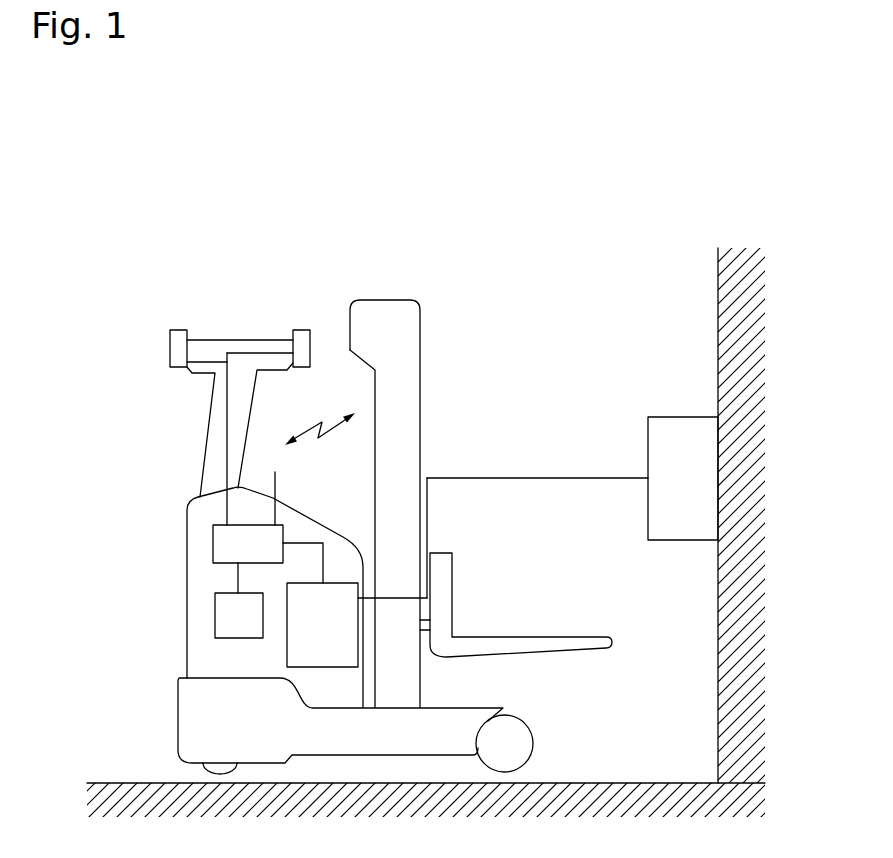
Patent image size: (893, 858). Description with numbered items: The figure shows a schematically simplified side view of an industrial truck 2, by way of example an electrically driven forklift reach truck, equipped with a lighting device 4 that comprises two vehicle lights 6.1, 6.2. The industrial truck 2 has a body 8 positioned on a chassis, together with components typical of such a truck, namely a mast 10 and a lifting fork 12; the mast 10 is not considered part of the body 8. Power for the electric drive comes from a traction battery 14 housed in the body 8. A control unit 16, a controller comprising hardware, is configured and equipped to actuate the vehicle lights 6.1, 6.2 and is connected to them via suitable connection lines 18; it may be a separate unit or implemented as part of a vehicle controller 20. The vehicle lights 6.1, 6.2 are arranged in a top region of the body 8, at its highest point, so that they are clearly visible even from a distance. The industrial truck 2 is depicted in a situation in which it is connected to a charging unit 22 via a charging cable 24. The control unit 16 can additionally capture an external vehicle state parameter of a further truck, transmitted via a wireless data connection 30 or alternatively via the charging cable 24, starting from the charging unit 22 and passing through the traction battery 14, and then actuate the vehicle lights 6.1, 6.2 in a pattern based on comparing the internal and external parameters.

The industrial truck 2 is at (465, 252).
The lighting device 4 is at (244, 303).
The vehicle light 6.1 is at (181, 340).
The vehicle light 6.2 is at (302, 340).
The body 8 is at (187, 575).
The mast 10 is at (422, 328).
The lifting fork 12 is at (524, 637).
The traction battery 14 is at (308, 632).
The control unit 16 is at (234, 554).
The connection lines 18 is at (227, 413).
The vehicle controller 20 is at (225, 628).
The charging unit 22 is at (672, 489).
The charging cable 24 is at (523, 478).
The wireless data connection 30 is at (330, 430).